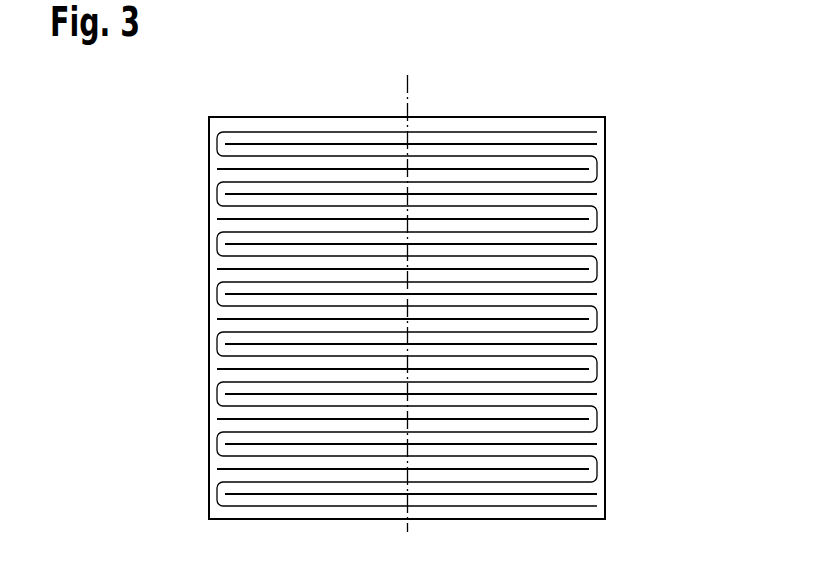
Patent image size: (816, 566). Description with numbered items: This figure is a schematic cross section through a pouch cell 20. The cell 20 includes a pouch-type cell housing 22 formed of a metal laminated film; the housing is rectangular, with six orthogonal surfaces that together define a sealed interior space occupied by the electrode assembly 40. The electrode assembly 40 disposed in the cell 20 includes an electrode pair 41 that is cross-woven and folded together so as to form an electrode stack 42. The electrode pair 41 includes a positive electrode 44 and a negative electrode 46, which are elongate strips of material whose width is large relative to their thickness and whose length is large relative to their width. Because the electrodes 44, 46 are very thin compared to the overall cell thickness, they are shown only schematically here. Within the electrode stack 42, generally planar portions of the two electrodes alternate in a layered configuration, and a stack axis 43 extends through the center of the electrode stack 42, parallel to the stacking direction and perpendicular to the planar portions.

The cell 20 is at (461, 287).
The pouch-type cell housing 22 is at (606, 186).
The electrode assembly 40 is at (407, 273).
The electrode stack 42 is at (467, 116).
The stack axis 43 is at (407, 88).
The electrode pair 41 is at (327, 169).
The positive electrode 44 is at (217, 142).
The negative electrode 46 is at (217, 192).